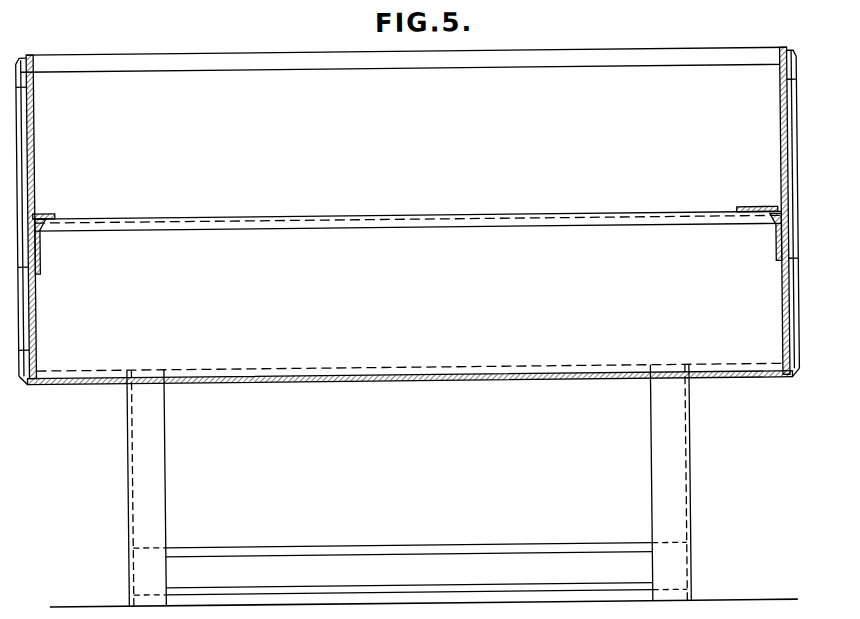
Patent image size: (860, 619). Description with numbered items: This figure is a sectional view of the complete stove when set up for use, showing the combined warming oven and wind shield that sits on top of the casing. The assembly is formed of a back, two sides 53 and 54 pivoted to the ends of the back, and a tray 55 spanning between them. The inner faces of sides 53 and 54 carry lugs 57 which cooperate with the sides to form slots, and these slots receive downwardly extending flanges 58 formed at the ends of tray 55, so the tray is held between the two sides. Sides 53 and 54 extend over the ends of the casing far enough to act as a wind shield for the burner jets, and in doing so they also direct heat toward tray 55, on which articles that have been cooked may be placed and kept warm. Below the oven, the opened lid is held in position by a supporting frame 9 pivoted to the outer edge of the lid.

The frame 9 is at (161, 500).
The side 53 is at (782, 134).
The side 54 is at (34, 152).
The tray 55 is at (602, 205).
The lug 57 is at (39, 228).
The flange 58 is at (41, 216).